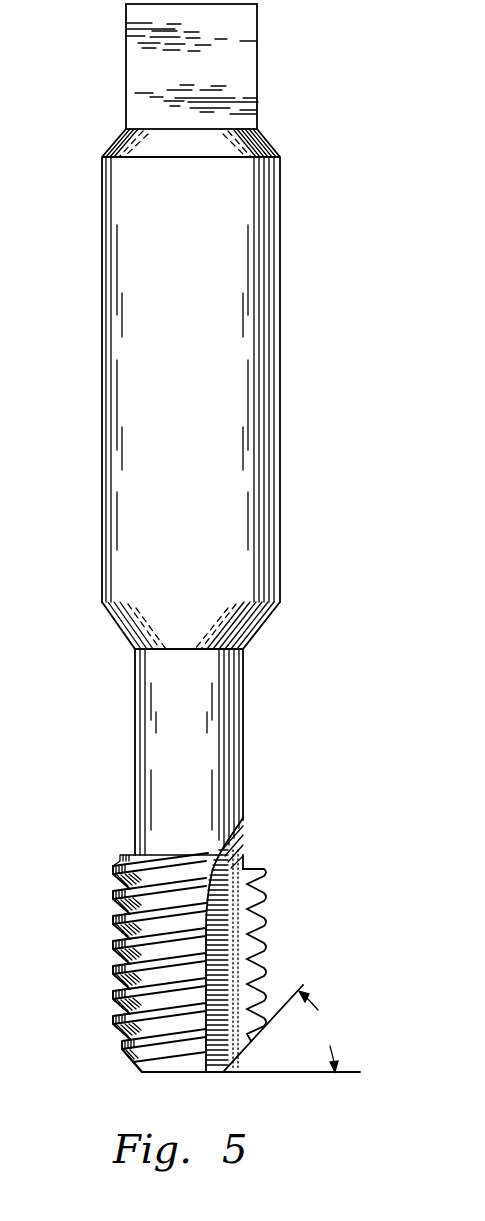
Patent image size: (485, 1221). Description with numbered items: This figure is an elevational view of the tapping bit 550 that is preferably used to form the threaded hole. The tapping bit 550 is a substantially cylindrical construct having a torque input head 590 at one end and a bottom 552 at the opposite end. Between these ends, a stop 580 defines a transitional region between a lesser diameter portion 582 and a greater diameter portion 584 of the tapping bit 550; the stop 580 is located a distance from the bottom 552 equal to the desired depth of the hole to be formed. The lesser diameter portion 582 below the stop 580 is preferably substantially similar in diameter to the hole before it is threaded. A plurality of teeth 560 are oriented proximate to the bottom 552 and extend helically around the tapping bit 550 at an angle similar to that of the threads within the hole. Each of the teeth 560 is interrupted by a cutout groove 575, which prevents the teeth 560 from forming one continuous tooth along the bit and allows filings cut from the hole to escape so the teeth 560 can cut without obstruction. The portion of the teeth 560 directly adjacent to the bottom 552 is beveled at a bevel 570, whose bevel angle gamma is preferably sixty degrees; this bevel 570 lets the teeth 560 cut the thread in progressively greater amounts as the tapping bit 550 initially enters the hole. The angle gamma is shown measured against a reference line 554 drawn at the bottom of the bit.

The tapping bit 550 is at (296, 195).
The torque input head 590 is at (257, 68).
The greater diameter portion 584 is at (280, 532).
The stop 580 is at (263, 630).
The lesser diameter portion 582 is at (243, 705).
The cutout groove 575 is at (243, 845).
The teeth 560 is at (118, 868).
The bevel 570 is at (125, 1063).
The bottom 552 is at (150, 1075).
The reference line 554 is at (352, 1072).